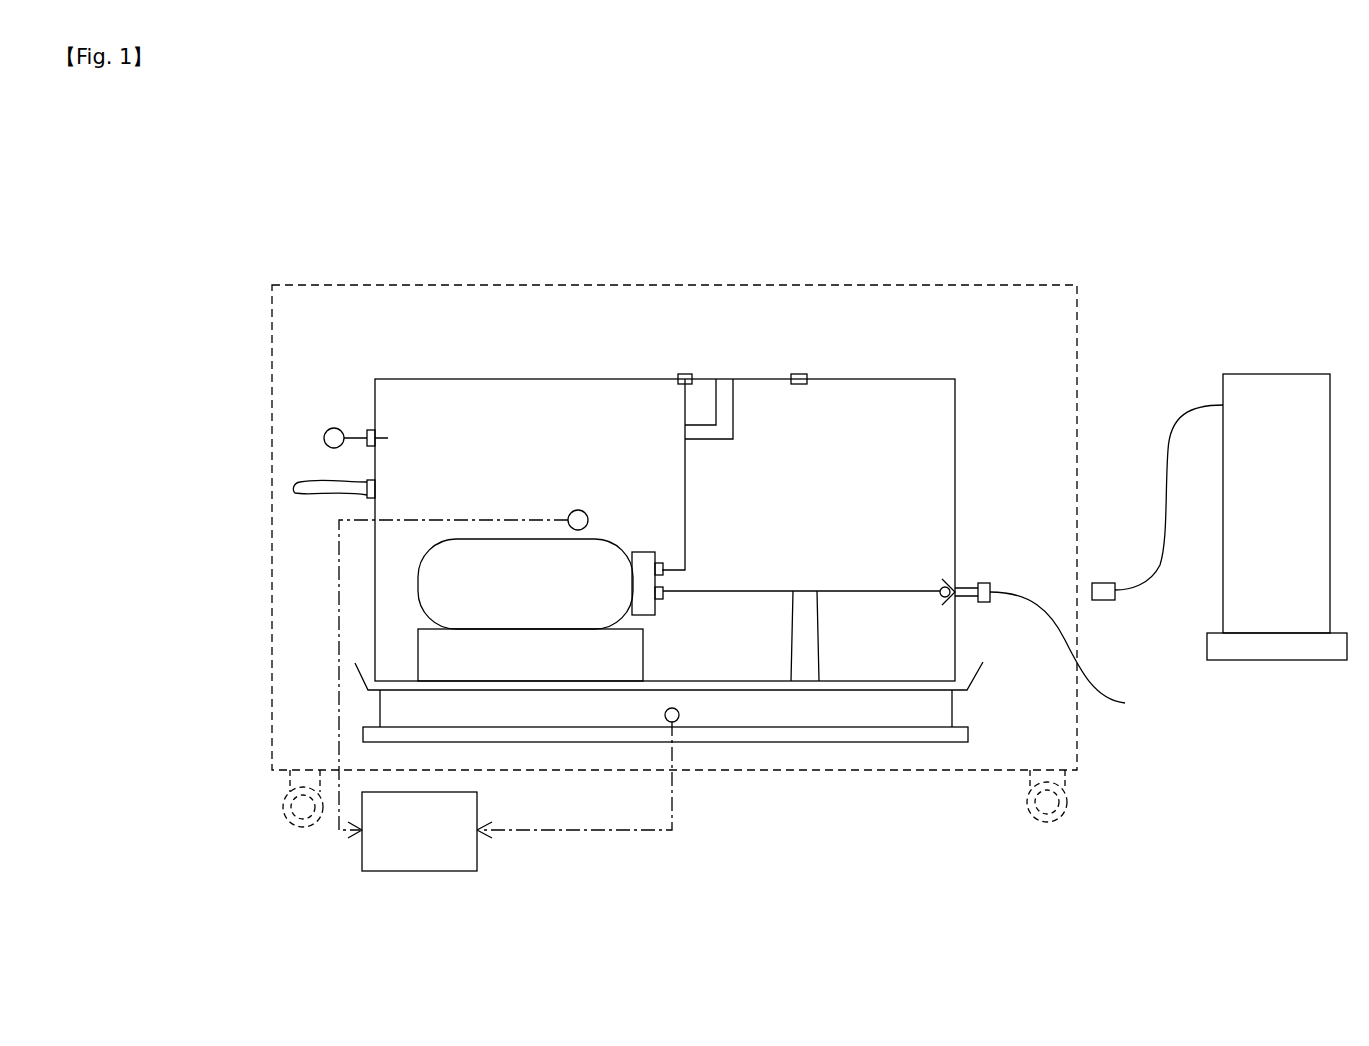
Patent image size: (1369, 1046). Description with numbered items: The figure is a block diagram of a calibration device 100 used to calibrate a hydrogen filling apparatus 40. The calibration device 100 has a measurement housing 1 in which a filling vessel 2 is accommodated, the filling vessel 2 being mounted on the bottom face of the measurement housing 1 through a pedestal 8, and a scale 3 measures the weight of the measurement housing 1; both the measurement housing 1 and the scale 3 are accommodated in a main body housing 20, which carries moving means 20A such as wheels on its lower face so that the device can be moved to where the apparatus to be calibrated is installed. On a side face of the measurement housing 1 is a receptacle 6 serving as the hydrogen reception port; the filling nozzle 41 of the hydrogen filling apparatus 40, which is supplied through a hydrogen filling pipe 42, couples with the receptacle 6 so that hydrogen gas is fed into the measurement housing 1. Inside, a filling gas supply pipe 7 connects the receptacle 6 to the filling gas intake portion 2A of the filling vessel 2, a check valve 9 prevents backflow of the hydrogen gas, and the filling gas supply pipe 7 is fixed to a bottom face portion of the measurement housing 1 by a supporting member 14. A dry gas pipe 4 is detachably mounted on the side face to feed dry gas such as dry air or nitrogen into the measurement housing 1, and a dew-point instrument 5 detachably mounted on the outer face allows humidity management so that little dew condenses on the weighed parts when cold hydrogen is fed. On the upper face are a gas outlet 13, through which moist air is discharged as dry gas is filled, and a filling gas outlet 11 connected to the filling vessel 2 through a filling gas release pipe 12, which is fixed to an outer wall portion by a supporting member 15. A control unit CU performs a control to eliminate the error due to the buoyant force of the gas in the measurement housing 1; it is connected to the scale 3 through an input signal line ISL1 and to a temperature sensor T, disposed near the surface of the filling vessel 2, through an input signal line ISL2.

The measurement housing 1 is at (468, 379).
The filling vessel 2 is at (615, 539).
The filling gas intake portion 2A is at (648, 552).
The scale 3 is at (779, 713).
The dry gas pipe 4 is at (332, 498).
The dew-point instrument 5 is at (334, 428).
The receptacle 6 is at (1050, 649).
The filling gas supply pipe 7 is at (855, 591).
The pedestal 8 is at (605, 665).
The check valve 9 is at (950, 583).
The filling gas outlet 11 is at (685, 374).
The filling gas release pipe 12 is at (685, 518).
The gas outlet 13 is at (799, 374).
The supporting member 14 is at (817, 634).
The supporting member 15 is at (733, 408).
The main body housing 20 is at (540, 283).
The moving means 20A is at (1025, 802).
The hydrogen filling apparatus 40 is at (1250, 374).
The filling nozzle 41 is at (1103, 600).
The hydrogen filling pipe 42 is at (1165, 456).
The calibration device 100 is at (913, 253).
The temperature sensor T is at (578, 510).
The control unit CU is at (477, 853).
The input signal line ISL1 is at (672, 813).
The input signal line ISL2 is at (339, 630).